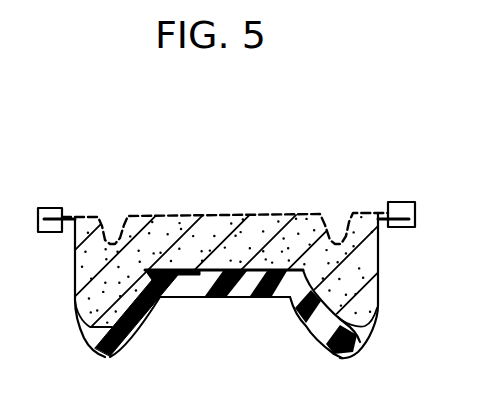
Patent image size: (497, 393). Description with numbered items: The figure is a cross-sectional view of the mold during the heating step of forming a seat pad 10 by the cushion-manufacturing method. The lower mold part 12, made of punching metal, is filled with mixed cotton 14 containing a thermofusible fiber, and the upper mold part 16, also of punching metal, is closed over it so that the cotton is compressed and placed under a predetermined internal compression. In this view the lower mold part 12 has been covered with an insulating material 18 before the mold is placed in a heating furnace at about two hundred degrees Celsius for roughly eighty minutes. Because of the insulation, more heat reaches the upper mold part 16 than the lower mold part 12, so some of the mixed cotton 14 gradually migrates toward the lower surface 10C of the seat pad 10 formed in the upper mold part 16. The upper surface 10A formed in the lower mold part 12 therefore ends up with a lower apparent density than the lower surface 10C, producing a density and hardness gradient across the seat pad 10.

The seat pad 10 is at (396, 275).
The upper surface of the seat pad 10A is at (203, 297).
The lower surface of the seat pad 10C is at (210, 216).
The lower mold part 12 is at (251, 297).
The mixed cotton 14 is at (305, 232).
The upper mold part 16 is at (247, 215).
The insulating material 18 is at (347, 343).